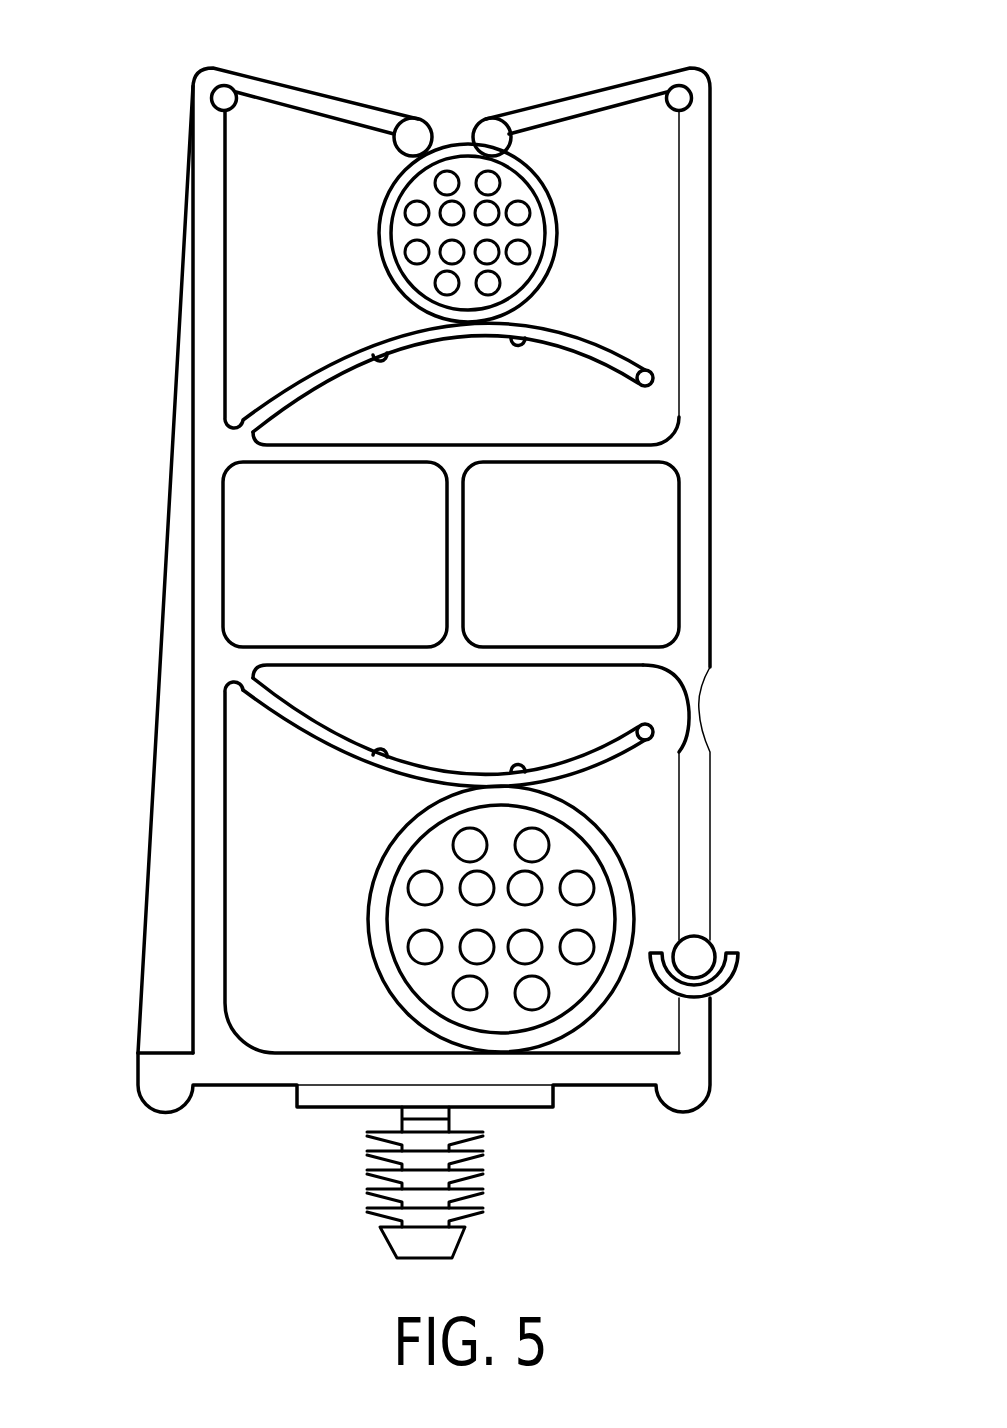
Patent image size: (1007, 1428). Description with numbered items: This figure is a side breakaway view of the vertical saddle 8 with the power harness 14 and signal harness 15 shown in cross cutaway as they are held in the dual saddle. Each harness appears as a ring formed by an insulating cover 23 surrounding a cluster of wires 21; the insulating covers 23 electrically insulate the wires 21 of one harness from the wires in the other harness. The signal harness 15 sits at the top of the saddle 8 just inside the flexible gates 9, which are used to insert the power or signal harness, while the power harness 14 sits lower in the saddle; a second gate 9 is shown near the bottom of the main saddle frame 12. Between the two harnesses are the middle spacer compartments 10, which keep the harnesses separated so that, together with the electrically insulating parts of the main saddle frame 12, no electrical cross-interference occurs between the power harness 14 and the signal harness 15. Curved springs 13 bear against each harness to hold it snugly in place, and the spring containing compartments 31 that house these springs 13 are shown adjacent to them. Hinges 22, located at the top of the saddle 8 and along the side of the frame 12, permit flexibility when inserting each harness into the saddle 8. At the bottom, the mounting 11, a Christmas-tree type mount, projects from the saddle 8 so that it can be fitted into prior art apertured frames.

The vertical saddle 8 is at (748, 246).
The flexible gate 9 is at (455, 135).
The middle spacer compartment 10 is at (657, 538).
The mounting 11 is at (483, 1175).
The main saddle frame 12 is at (695, 622).
The spring 13 is at (318, 377).
The power harness 14 is at (620, 886).
The signal harness 15 is at (544, 248).
The wire 21 is at (417, 213).
The hinge 22 is at (223, 95).
The insulating cover 23 is at (547, 193).
The spring containing compartment 31 is at (658, 400).